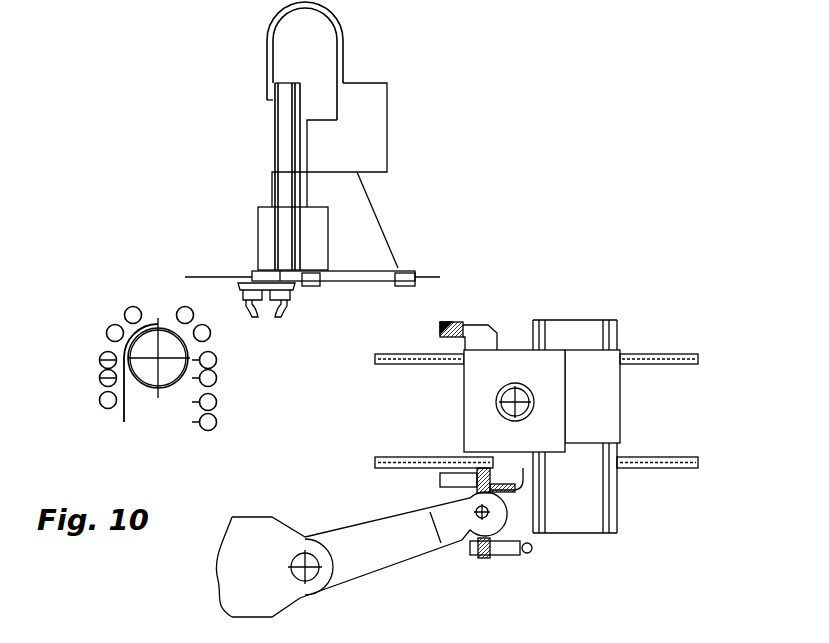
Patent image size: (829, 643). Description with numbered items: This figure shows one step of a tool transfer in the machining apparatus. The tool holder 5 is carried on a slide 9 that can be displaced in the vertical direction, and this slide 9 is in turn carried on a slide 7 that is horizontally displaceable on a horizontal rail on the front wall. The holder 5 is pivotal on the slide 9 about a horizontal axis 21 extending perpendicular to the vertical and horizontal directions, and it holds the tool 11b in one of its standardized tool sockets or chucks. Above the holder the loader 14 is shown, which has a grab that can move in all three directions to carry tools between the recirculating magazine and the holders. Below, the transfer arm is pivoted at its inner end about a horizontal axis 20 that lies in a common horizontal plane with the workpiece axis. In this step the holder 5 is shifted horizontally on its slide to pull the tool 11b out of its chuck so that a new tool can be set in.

The loader 14 is at (287, 131).
The tool holder 5 is at (477, 403).
The horizontal axis 21 is at (517, 384).
The slide 9 is at (600, 387).
The slide 7 is at (595, 487).
The tool 11b is at (440, 473).
The horizontal axis 20 is at (298, 558).